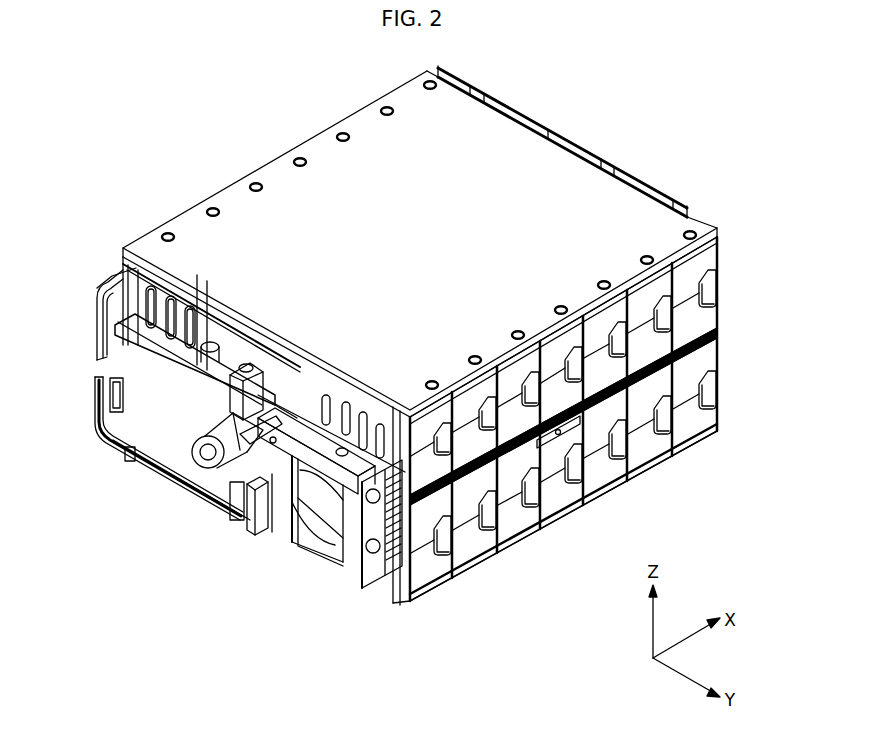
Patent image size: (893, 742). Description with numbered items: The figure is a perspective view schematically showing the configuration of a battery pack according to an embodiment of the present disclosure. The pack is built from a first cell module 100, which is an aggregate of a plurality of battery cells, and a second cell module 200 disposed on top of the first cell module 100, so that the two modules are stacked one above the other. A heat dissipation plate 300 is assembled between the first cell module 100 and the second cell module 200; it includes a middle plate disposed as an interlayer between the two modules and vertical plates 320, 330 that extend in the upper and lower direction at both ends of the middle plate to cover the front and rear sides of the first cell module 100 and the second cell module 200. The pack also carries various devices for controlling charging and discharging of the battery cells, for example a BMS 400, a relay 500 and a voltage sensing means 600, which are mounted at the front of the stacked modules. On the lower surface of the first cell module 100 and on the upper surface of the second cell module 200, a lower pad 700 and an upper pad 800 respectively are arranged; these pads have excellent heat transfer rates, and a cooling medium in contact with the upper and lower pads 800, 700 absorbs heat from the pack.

The first cell module 100 is at (716, 414).
The second cell module 200 is at (716, 317).
The heat dissipation plate 300 is at (716, 332).
The vertical plate 320 is at (706, 219).
The vertical plate 330 is at (123, 274).
The BMS 400 is at (97, 430).
The relay 500 is at (320, 503).
The voltage sensing means 600 is at (97, 305).
The lower pad 700 is at (523, 537).
The upper pad 800 is at (283, 178).